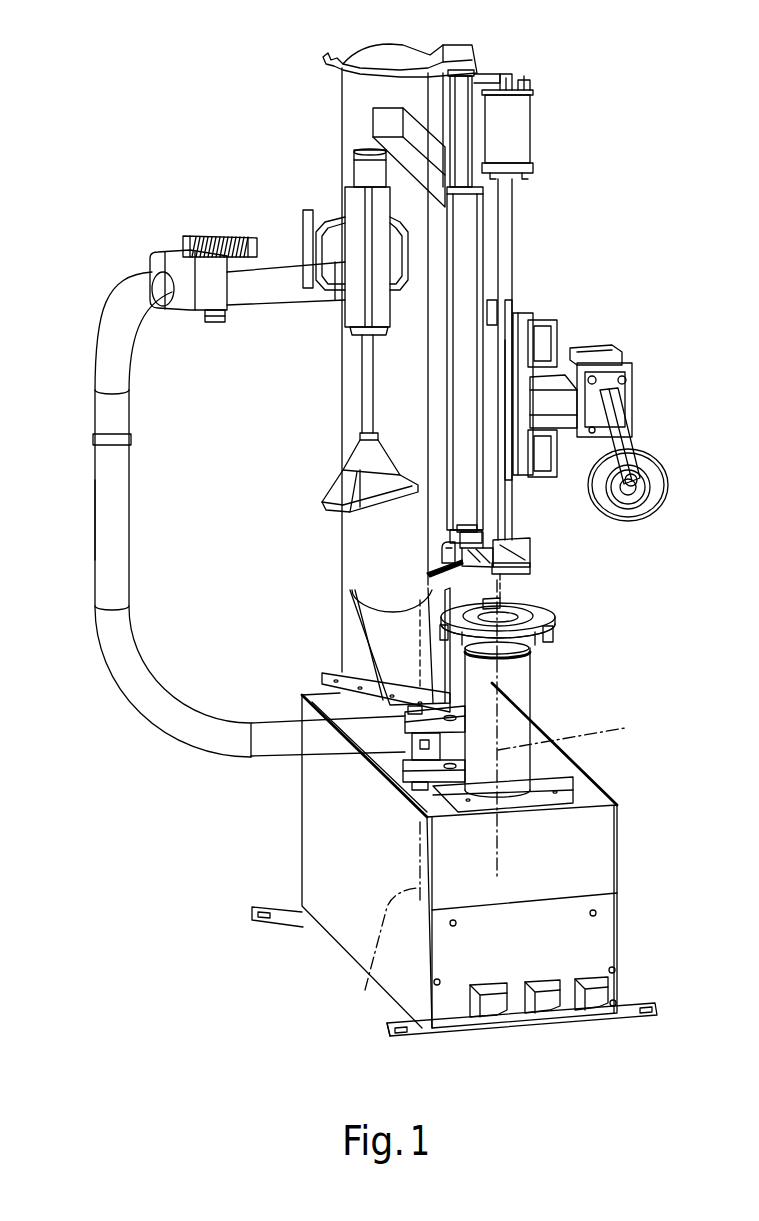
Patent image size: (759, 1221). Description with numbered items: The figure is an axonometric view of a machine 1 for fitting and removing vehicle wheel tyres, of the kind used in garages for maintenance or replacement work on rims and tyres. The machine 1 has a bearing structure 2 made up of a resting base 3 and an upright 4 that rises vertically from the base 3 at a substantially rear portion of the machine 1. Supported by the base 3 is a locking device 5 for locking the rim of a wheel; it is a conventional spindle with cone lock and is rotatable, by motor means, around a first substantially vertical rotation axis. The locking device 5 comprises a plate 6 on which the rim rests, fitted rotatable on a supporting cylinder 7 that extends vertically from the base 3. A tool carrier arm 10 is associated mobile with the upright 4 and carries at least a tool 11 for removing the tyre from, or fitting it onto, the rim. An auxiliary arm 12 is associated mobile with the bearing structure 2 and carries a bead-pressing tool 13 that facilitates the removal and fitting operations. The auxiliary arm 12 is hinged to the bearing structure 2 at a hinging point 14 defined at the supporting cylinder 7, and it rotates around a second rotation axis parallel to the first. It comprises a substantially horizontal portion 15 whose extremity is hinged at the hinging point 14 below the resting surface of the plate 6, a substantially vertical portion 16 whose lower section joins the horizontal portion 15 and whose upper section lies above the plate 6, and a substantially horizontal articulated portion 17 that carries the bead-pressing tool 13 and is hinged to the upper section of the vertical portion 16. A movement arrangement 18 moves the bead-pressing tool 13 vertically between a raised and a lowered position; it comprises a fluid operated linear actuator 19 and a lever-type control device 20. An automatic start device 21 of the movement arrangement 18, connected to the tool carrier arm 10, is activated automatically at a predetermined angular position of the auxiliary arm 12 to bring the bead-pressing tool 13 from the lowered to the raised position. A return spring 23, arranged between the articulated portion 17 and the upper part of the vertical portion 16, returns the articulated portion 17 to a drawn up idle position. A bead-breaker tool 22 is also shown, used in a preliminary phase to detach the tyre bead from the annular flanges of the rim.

The machine 1 is at (638, 68).
The bearing structure 2 is at (318, 828).
The resting base 3 is at (600, 873).
The upright 4 is at (352, 90).
The locking device 5 is at (545, 612).
The plate 6 is at (555, 627).
The supporting cylinder 7 is at (515, 678).
The tool carrier arm 10 is at (487, 265).
The tool 11 is at (512, 566).
The auxiliary arm 12 is at (100, 497).
The bead-pressing tool 13 is at (340, 492).
The hinging point 14 is at (570, 795).
The horizontal portion 15 is at (268, 745).
The vertical portion 16 is at (110, 560).
The articulated portion 17 is at (250, 292).
The movement arrangement 18 is at (350, 196).
The linear actuator 19 is at (368, 385).
The control device 20 is at (320, 240).
The automatic start device 21 is at (410, 708).
The bead-breaker tool 22 is at (622, 403).
The return spring 23 is at (208, 242).